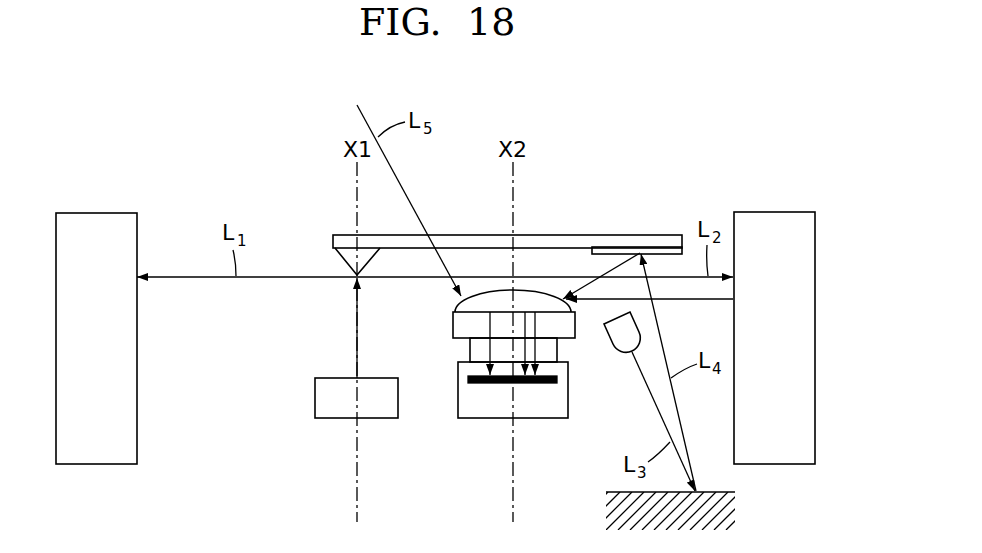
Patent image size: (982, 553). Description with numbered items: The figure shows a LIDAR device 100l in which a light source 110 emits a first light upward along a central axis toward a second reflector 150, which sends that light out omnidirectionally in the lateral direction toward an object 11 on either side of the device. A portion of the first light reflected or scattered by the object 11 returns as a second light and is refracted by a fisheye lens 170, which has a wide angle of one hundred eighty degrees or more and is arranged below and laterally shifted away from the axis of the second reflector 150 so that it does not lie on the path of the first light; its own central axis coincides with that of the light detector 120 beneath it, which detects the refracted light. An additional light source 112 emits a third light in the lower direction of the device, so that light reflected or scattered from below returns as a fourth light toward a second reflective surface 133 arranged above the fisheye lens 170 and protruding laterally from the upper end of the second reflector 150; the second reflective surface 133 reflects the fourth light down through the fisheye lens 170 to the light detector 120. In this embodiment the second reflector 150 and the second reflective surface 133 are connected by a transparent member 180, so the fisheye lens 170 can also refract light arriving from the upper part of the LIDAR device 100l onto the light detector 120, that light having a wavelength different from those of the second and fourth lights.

The LIDAR device 100l is at (702, 166).
The object 11 is at (97, 455).
The light source 110 is at (315, 398).
The additional light source 112 is at (623, 352).
The light detector 120 is at (541, 418).
The second reflective surface 133 is at (663, 247).
The second reflector 150 is at (345, 243).
The fisheye lens 170 is at (492, 300).
The transparent member 180 is at (571, 235).